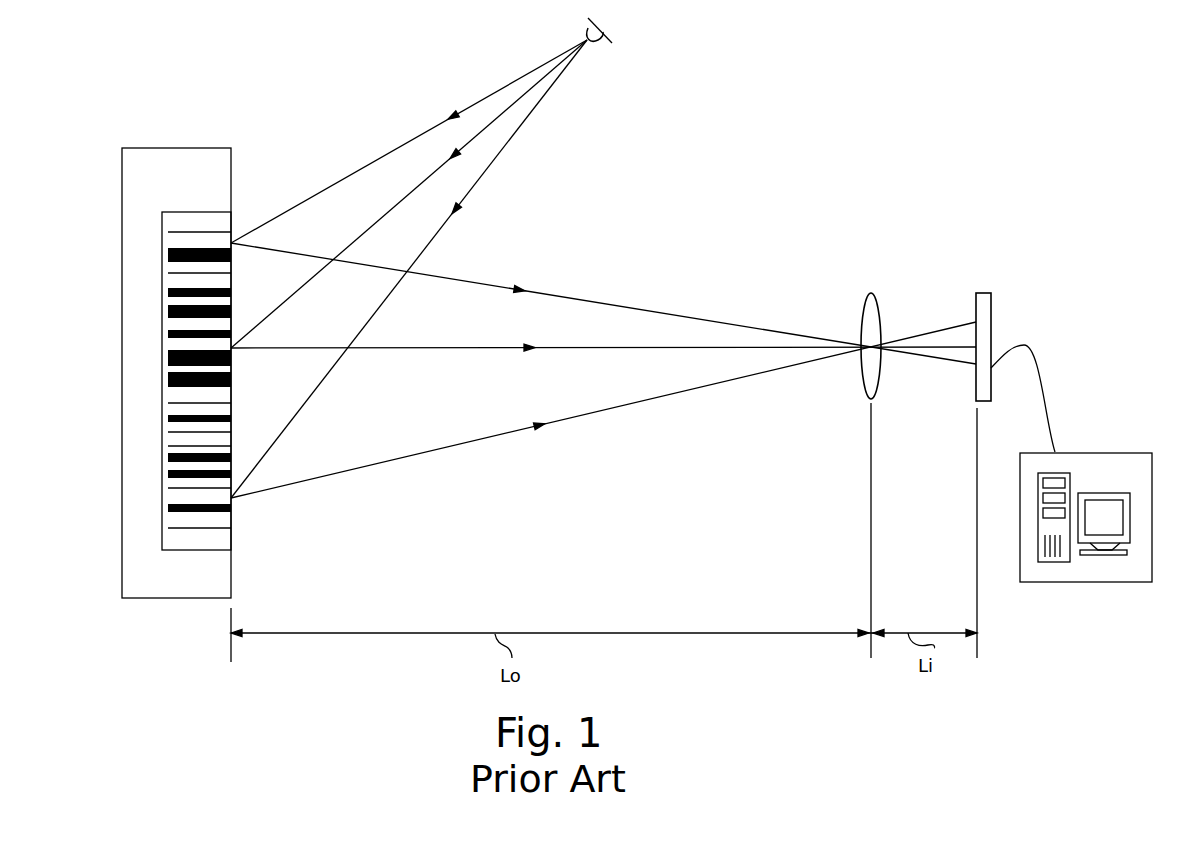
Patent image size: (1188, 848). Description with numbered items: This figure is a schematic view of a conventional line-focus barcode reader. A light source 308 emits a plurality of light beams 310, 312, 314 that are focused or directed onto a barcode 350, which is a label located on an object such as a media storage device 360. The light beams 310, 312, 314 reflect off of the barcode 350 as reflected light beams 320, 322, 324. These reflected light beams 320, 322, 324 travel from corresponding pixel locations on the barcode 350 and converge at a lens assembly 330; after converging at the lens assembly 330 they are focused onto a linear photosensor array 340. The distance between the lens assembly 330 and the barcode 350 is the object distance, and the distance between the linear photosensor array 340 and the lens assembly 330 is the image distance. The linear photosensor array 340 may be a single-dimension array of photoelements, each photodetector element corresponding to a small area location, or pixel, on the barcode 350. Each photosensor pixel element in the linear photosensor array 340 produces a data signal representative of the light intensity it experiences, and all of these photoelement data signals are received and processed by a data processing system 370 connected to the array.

The light source 308 is at (601, 48).
The light beam 310 is at (417, 138).
The light beam 312 is at (372, 227).
The light beam 314 is at (485, 168).
The reflected light beam 320 is at (680, 315).
The reflected light beam 322 is at (420, 349).
The reflected light beam 324 is at (658, 400).
The lens assembly 330 is at (870, 293).
The linear photosensor array 340 is at (983, 292).
The barcode 350 is at (197, 551).
The media storage device 360 is at (193, 148).
The data processing system 370 is at (1122, 452).